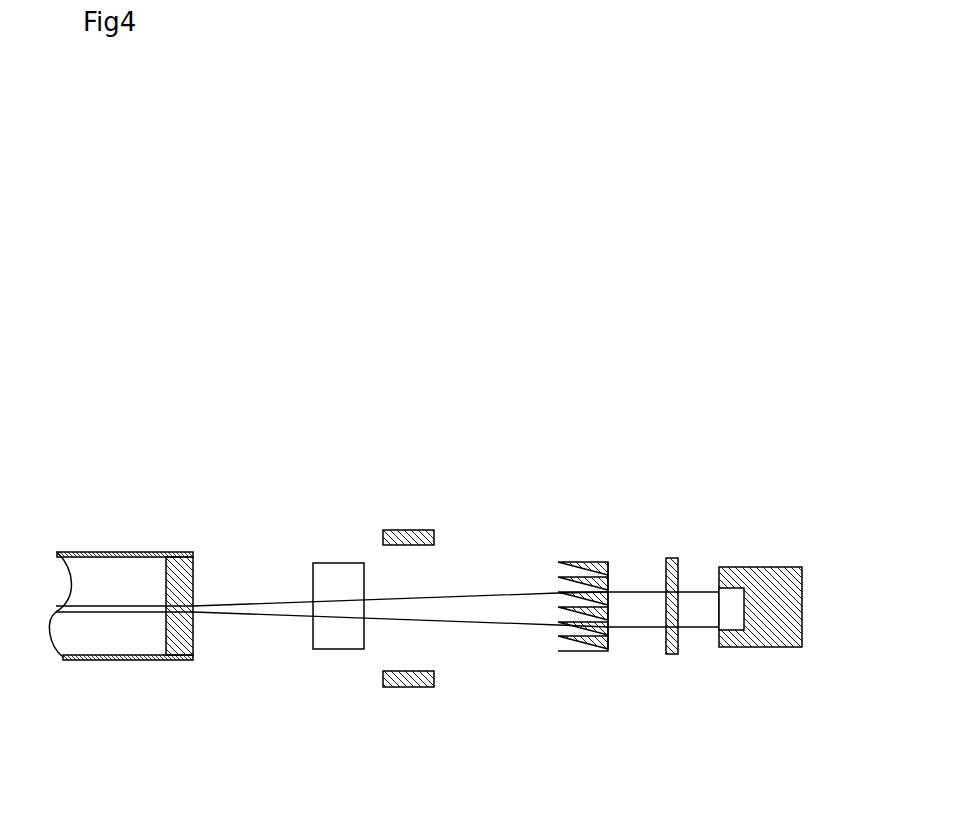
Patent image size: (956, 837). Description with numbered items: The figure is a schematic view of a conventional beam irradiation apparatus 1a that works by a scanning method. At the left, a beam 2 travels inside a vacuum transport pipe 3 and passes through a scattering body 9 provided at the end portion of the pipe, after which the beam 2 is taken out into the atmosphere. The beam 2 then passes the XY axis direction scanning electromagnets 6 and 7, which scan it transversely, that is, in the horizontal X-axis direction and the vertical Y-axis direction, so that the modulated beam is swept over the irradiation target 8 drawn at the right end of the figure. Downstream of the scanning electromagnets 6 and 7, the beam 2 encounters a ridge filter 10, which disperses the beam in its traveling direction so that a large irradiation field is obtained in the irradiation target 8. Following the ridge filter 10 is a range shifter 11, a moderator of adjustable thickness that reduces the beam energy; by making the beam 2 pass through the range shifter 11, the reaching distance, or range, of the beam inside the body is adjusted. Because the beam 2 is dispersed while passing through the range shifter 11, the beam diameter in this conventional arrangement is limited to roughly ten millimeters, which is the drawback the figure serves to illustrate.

The beam irradiation apparatus 1a is at (537, 462).
The beam 2 is at (238, 610).
The vacuum transport pipe 3 is at (106, 552).
The XY axis direction scanning electromagnet 6 is at (337, 650).
The XY axis direction scanning electromagnet 7 is at (404, 530).
The irradiation target 8 is at (780, 567).
The scattering body 9 is at (194, 577).
The ridge filter 10 is at (597, 562).
The range shifter 11 is at (673, 558).